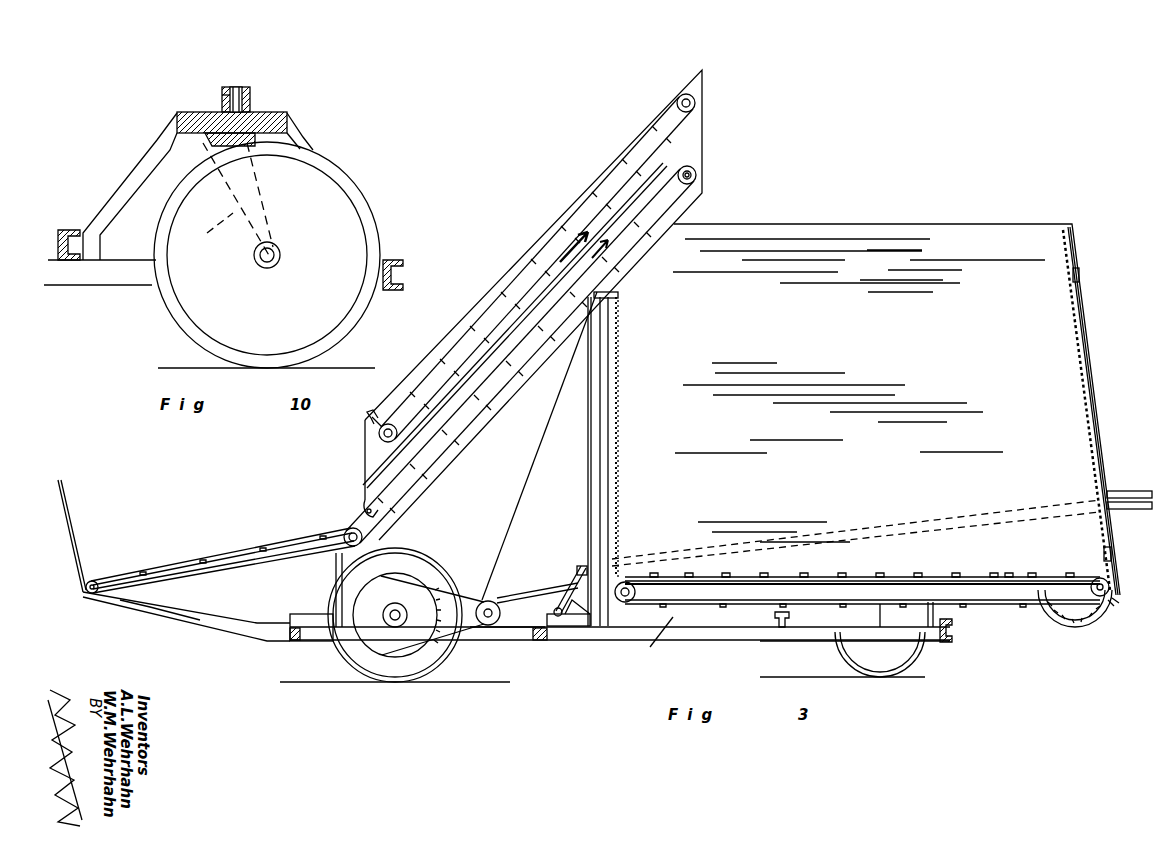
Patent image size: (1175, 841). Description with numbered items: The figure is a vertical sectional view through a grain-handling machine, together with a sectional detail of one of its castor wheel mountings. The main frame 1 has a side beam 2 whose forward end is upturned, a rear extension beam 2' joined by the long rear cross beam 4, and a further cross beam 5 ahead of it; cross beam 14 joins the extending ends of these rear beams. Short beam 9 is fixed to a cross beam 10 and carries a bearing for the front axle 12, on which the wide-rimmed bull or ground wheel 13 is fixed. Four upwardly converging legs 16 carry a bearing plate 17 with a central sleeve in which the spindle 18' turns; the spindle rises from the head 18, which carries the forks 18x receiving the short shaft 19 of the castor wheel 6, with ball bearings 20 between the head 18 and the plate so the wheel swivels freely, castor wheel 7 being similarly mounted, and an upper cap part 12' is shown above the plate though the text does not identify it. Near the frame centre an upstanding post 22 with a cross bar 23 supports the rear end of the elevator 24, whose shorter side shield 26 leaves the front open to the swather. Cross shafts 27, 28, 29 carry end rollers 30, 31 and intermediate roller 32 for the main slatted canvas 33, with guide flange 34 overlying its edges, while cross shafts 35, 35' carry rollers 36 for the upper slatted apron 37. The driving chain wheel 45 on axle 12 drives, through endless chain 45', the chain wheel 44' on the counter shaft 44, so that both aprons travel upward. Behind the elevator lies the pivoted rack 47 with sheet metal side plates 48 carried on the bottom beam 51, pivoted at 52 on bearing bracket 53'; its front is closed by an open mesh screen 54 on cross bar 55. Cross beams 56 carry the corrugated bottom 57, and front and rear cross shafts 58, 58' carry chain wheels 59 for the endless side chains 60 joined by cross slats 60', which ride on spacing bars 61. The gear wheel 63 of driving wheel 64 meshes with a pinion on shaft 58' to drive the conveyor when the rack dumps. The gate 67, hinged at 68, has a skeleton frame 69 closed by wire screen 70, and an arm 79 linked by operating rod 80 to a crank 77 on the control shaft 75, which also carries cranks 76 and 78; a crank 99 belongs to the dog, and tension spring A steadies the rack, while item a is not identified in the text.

In FIG. 3, the main frame 1 is at (715, 641).
In FIG. 3, the side beam 2 is at (208, 641).
In FIG. 3, the extension beam 2' is at (855, 658).
In FIG. 10, the rear cross beam 4 is at (395, 262).
In FIG. 3, the rear cross beam 4 is at (946, 643).
In FIG. 10, the cross beam 5 is at (70, 230).
In FIG. 3, the cross beam 5 is at (778, 616).
In FIG. 10, the castor wheel 6 is at (182, 328).
In FIG. 3, the castor wheel 7 is at (916, 677).
In FIG. 3, the short beam 9 is at (524, 641).
In FIG. 3, the cross beam 10 is at (542, 642).
In FIG. 3, the front axle 12 is at (370, 655).
In FIG. 10, the cap nut 12' is at (265, 95).
In FIG. 3, the bull or ground wheel 13 is at (398, 672).
In FIG. 10, the cross beam 14 is at (100, 290).
In FIG. 10, the leg 16 is at (128, 178).
In FIG. 3, the leg 16 is at (935, 612).
In FIG. 10, the bearing plate 17 is at (287, 115).
In FIG. 10, the head 18 is at (253, 197).
In FIG. 10, the spindle 18' is at (201, 93).
In FIG. 10, the fork 18x is at (209, 238).
In FIG. 10, the short shaft 19 is at (262, 265).
In FIG. 10, the ball bearings 20 is at (208, 145).
In FIG. 3, the upstanding post 22 is at (586, 458).
In FIG. 3, the cross bar 23 is at (604, 306).
In FIG. 3, the elevator 24 is at (537, 268).
In FIG. 3, the side shield 26 is at (520, 356).
In FIG. 3, the cross shaft 27 is at (80, 594).
In FIG. 3, the cross shaft 28 is at (336, 556).
In FIG. 3, the cross shaft 29 is at (698, 175).
In FIG. 3, the end roller 30 is at (97, 580).
In FIG. 3, the end roller 31 is at (692, 171).
In FIG. 3, the intermediate roller 32 is at (364, 539).
In FIG. 3, the main slatted canvas 33 is at (460, 437).
In FIG. 3, the guide flange 34 is at (380, 514).
In FIG. 3, the cross shaft 35 is at (361, 439).
In FIG. 3, the cross shaft 35' is at (706, 102).
In FIG. 3, the roller 36 is at (386, 444).
In FIG. 3, the upper slatted endless apron 37 is at (487, 312).
In FIG. 3, the counter shaft 44 is at (475, 642).
In FIG. 3, the chain wheel 44' is at (488, 594).
In FIG. 3, the driving chain wheel 45 is at (406, 589).
In FIG. 3, the endless chain 45' is at (432, 602).
In FIG. 3, the pivoted rack 47 is at (958, 222).
In FIG. 3, the sheet metal plate 48 is at (878, 248).
In FIG. 3, the bottom beam 51 is at (950, 580).
In FIG. 3, the pivot 52 is at (896, 565).
In FIG. 3, the bearing bracket 53' is at (880, 640).
In FIG. 3, the open mesh screen 54 is at (620, 450).
In FIG. 3, the cross bar 55 is at (616, 295).
In FIG. 3, the cross beam 56 is at (1050, 605).
In FIG. 3, the corrugated sheet metal bottom 57 is at (826, 576).
In FIG. 3, the front cross shaft 58 is at (612, 624).
In FIG. 3, the rear cross shaft 58' is at (1124, 621).
In FIG. 3, the chain wheel 59 is at (632, 575).
In FIG. 3, the endless side chain 60 is at (856, 548).
In FIG. 3, the cross slat 60' is at (856, 537).
In FIG. 3, the spacing bar 61 is at (1010, 574).
In FIG. 3, the gear wheel 63 is at (1070, 612).
In FIG. 3, the driving wheel 64 is at (1092, 622).
In FIG. 3, the gate 67 is at (1092, 392).
In FIG. 3, the hinge 68 is at (1080, 275).
In FIG. 3, the skeleton frame structure 69 is at (1086, 338).
In FIG. 3, the open meshed wire screen 70 is at (1080, 344).
In FIG. 3, the control shaft 75 is at (556, 590).
In FIG. 3, the crank 76 is at (575, 628).
In FIG. 3, the crank 77 is at (584, 566).
In FIG. 3, the crank 78 is at (565, 580).
In FIG. 3, the arm 79 is at (1130, 512).
In FIG. 3, the operating rod 80 is at (1122, 490).
In FIG. 3, the crank 99 is at (436, 615).
In FIG. 3, the cable a is at (540, 440).
In FIG. 3, the tension spring A is at (652, 646).